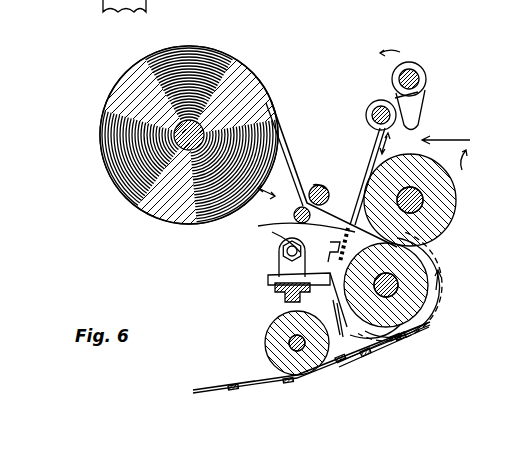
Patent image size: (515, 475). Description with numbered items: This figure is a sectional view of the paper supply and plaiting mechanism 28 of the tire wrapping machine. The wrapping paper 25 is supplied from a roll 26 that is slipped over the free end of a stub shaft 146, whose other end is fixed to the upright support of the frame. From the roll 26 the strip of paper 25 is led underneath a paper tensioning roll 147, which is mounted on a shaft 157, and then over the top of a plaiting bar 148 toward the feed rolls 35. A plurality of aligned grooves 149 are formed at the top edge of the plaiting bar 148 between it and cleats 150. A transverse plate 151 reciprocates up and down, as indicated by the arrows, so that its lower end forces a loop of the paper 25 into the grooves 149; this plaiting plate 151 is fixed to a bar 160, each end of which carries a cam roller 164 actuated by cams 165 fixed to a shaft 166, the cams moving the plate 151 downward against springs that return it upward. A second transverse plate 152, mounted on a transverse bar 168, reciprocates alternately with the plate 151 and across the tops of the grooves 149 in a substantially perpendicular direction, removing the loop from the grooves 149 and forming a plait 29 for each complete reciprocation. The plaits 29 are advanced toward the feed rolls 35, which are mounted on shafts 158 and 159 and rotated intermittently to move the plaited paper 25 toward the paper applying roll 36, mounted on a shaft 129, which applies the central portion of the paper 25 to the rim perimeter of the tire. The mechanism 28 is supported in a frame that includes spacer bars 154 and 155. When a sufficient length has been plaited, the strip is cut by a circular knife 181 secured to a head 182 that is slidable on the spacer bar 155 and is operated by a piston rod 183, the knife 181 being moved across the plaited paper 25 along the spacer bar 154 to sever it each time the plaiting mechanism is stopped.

The roll 26 is at (215, 57).
The stub shaft 146 is at (176, 138).
The paper 25 is at (284, 130).
The transverse plate 151 is at (368, 118).
The shaft 157 is at (313, 185).
The paper tensioning roll 147 is at (325, 188).
The grooves 149 is at (366, 180).
The bar 160 is at (375, 100).
The shaft 166 is at (420, 80).
The cam roller 164 is at (412, 108).
The cams 165 is at (418, 120).
The plaiting mechanism 28 is at (460, 147).
The shaft 158 is at (425, 200).
The transverse bar 168 is at (294, 215).
The transverse plate 152 is at (268, 232).
The plaiting bar 148 is at (345, 240).
The cleats 150 is at (279, 252).
The piston rod 183 is at (268, 280).
The head 182 is at (275, 292).
The spacer bar 155 is at (290, 304).
The feed rolls 35 is at (445, 262).
The shaft 159 is at (432, 310).
The paper applying roll 36 is at (270, 343).
The circular knife 181 is at (372, 350).
The spacer bar 154 is at (385, 355).
The shaft 129 is at (300, 375).
The plaits 29 is at (240, 386).